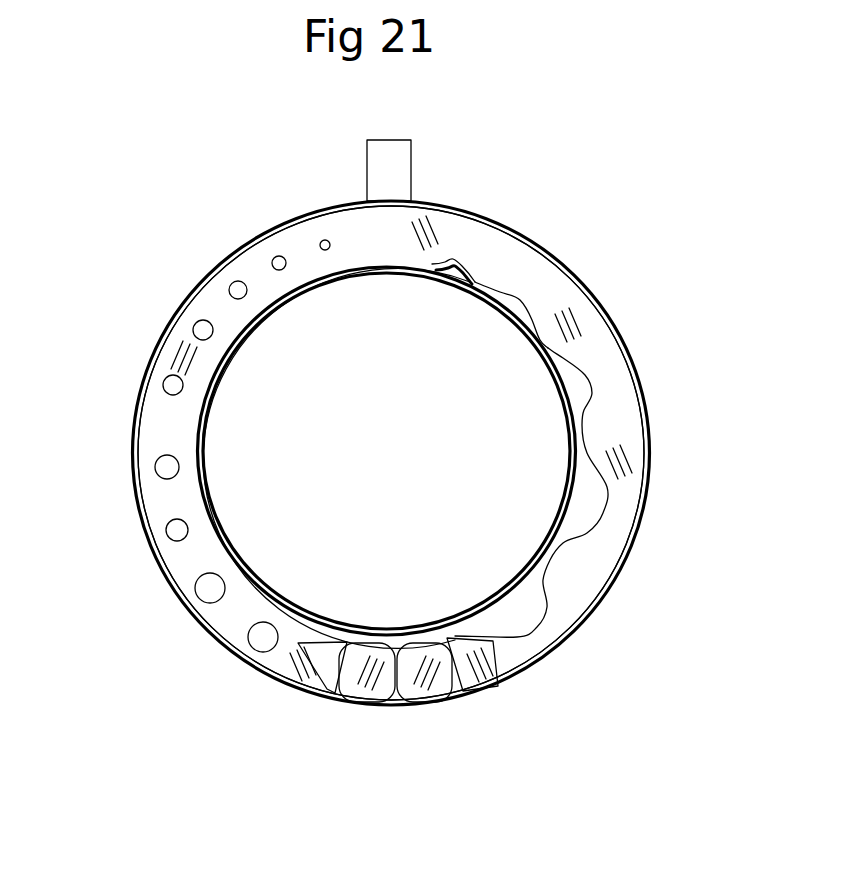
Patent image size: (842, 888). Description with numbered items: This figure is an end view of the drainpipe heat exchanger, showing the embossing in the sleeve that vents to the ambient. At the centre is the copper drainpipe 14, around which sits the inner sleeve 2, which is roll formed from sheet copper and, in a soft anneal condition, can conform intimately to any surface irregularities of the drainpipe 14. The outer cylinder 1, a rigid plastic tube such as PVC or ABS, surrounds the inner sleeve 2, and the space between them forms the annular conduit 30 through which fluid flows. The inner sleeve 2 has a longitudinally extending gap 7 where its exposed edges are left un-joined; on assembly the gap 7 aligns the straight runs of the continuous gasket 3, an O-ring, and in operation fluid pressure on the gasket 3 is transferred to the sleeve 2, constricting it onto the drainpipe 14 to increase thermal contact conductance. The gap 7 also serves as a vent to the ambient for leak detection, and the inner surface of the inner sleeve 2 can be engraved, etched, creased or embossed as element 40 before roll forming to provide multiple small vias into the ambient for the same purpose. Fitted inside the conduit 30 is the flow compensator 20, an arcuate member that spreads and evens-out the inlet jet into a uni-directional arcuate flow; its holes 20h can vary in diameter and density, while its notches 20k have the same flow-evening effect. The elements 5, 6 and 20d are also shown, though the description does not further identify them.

The outer cylinder 1 is at (190, 290).
The inner sleeve 2 is at (313, 277).
The continuous gasket 3 is at (412, 692).
The sensor 5 is at (437, 157).
The magnet 6 is at (402, 160).
The gap 7 is at (385, 637).
The drainpipe 14 is at (567, 497).
The flow compensator 20 is at (409, 433).
The outer ring side face 20d is at (173, 503).
The holes 20h is at (157, 462).
The notches 20k is at (515, 302).
The conduit 30 is at (177, 530).
The embossing 40 is at (453, 282).